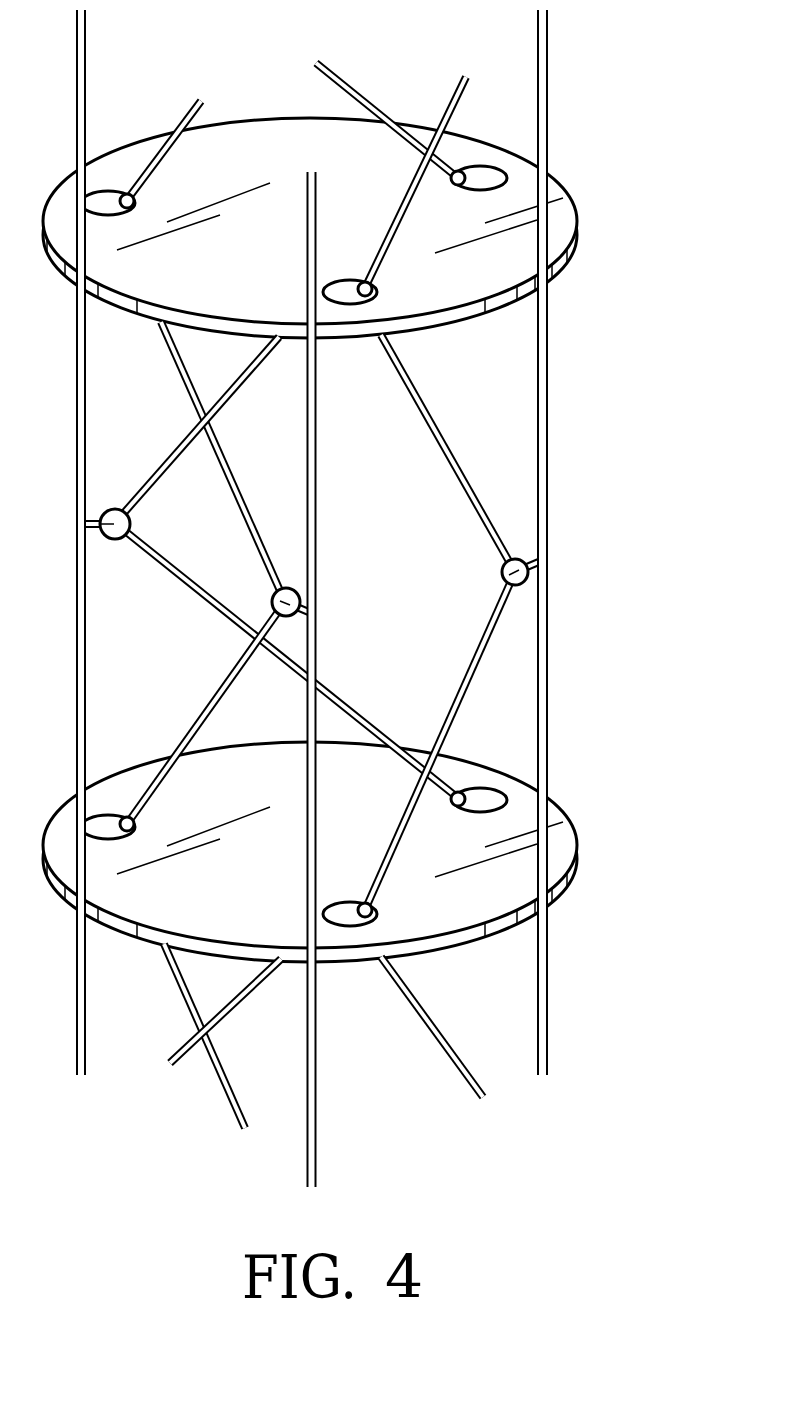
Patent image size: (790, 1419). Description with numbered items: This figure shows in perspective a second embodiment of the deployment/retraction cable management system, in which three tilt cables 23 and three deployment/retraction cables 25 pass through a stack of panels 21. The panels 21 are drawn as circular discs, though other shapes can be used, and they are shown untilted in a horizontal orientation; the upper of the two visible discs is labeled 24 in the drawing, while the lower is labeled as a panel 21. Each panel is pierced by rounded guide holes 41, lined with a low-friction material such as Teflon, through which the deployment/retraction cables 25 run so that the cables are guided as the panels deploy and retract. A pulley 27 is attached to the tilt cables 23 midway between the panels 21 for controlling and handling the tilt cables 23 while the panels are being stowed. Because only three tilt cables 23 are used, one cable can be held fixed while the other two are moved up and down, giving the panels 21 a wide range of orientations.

The panel 21 is at (563, 808).
The tilt cable 23 is at (548, 679).
The upper disc 24 is at (563, 184).
The deployment/retraction cable 25 is at (482, 487).
The pulley 27 is at (528, 581).
The guide hole 41 is at (483, 785).